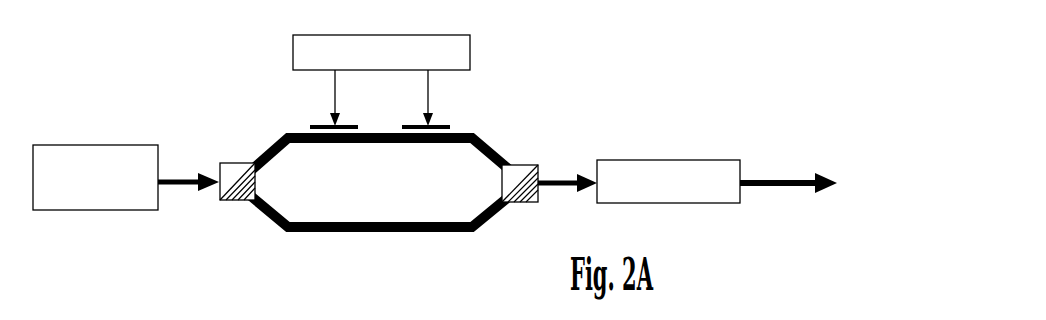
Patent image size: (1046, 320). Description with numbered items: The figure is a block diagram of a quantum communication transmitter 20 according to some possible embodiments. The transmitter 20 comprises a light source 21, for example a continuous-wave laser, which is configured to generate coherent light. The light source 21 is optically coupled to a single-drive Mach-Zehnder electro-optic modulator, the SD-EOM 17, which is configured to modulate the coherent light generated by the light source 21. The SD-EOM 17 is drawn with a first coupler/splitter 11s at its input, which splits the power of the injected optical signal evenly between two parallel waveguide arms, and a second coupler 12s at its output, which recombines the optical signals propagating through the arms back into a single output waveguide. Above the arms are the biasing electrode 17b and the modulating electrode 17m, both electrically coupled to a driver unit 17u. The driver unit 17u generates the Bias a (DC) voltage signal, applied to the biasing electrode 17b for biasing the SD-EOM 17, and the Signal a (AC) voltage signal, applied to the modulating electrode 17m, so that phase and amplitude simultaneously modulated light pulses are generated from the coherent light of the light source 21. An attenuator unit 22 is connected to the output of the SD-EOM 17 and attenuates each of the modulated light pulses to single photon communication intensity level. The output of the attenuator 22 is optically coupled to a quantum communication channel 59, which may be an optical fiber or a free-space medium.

The quantum communication transmitter 20 is at (207, 278).
The light source 21 is at (86, 145).
The first coupler/splitter 11s is at (232, 163).
The second coupler 12s is at (518, 165).
The SD-EOM 17 is at (390, 194).
The biasing electrode 17b is at (346, 126).
The modulating electrode 17m is at (407, 126).
The driver unit 17u is at (470, 53).
The attenuator unit 22 is at (704, 160).
The quantum communication channel 59 is at (772, 190).